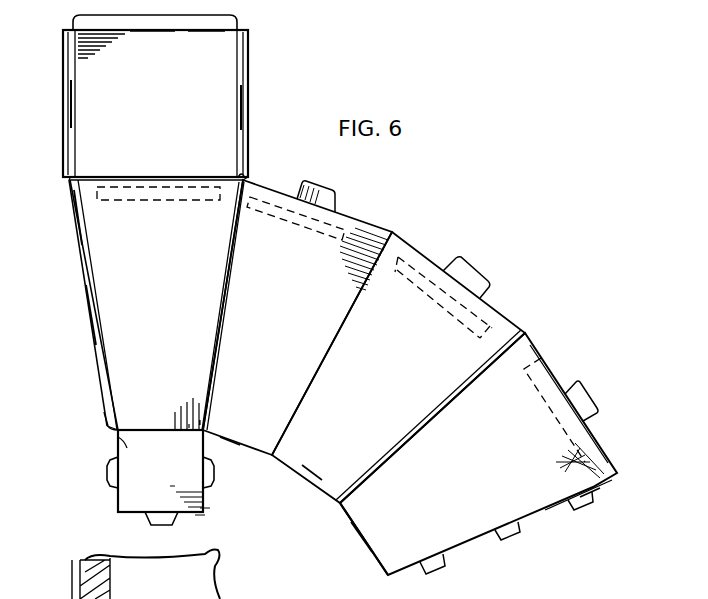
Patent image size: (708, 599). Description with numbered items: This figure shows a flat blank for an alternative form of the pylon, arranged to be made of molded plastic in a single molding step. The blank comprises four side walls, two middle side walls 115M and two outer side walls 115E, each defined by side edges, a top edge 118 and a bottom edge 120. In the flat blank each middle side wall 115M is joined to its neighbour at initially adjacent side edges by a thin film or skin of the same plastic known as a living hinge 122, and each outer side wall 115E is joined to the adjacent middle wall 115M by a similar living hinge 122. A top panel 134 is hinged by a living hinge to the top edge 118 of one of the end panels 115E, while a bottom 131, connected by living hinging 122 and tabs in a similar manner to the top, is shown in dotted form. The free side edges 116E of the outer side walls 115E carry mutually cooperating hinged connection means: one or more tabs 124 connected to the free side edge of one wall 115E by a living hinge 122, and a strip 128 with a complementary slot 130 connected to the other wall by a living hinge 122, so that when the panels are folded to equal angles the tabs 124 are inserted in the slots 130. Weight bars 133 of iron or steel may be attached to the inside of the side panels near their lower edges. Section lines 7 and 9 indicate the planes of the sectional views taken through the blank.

The section line 9 is at (157, 40).
The bottom 131 is at (228, 72).
The bottom edge 120 is at (243, 176).
The slot 130 is at (77, 224).
The free side edge 116E is at (86, 268).
The living hinge 122 is at (100, 333).
The outer side wall 115E is at (343, 377).
The middle side wall 115M is at (364, 341).
The strip 128 is at (108, 413).
The top edge 118 is at (118, 440).
The top panel 134 is at (125, 493).
The weight bar 133 is at (545, 380).
The tab 124 is at (585, 502).
The section line 7 is at (460, 337).